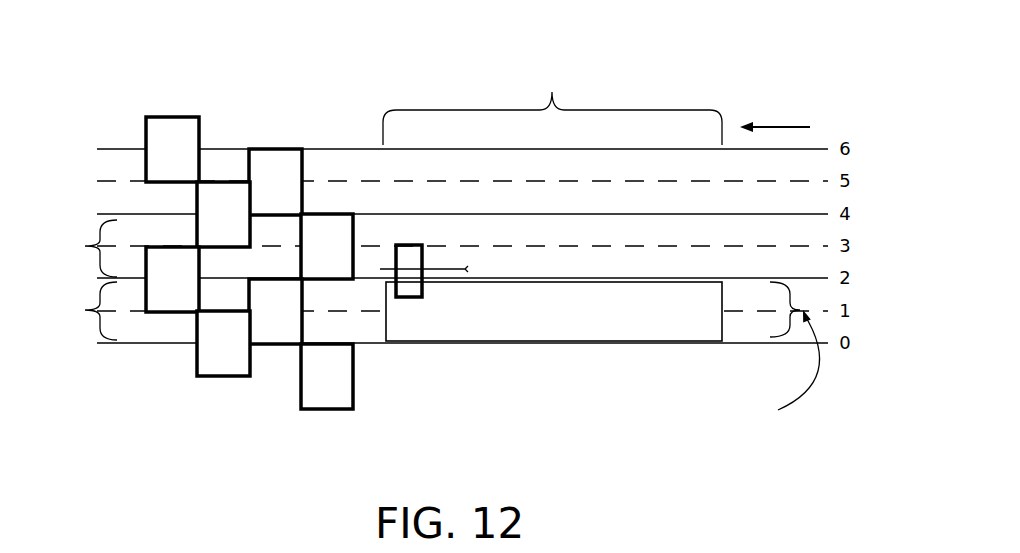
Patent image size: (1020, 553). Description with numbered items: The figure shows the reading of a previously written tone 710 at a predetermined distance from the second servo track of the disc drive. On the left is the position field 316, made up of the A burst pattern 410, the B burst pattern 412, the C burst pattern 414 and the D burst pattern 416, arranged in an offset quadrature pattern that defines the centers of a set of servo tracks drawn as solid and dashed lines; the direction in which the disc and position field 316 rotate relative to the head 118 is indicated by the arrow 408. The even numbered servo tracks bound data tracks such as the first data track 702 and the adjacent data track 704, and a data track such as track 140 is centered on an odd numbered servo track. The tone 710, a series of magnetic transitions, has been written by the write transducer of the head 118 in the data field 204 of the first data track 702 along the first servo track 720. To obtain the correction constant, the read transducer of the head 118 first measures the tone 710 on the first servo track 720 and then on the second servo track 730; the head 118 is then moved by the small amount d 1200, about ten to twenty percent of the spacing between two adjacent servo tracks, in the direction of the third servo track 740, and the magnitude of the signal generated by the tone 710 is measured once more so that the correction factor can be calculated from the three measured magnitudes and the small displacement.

The position field 316 is at (295, 248).
The data field 204 is at (552, 106).
The arrow 408 is at (775, 117).
The data track 704 is at (77, 248).
The data track 702 is at (81, 311).
The D burst pattern 416 is at (355, 247).
The small amount d 1200 is at (470, 272).
The servo track 3 740 is at (823, 245).
The servo track 2 730 is at (823, 277).
The servo track 1 720 is at (823, 308).
The A burst pattern 410 is at (160, 298).
The B burst pattern 412 is at (228, 370).
The C burst pattern 414 is at (280, 335).
The head 118 is at (410, 285).
The tone 710 is at (582, 327).
The track 140 is at (777, 369).